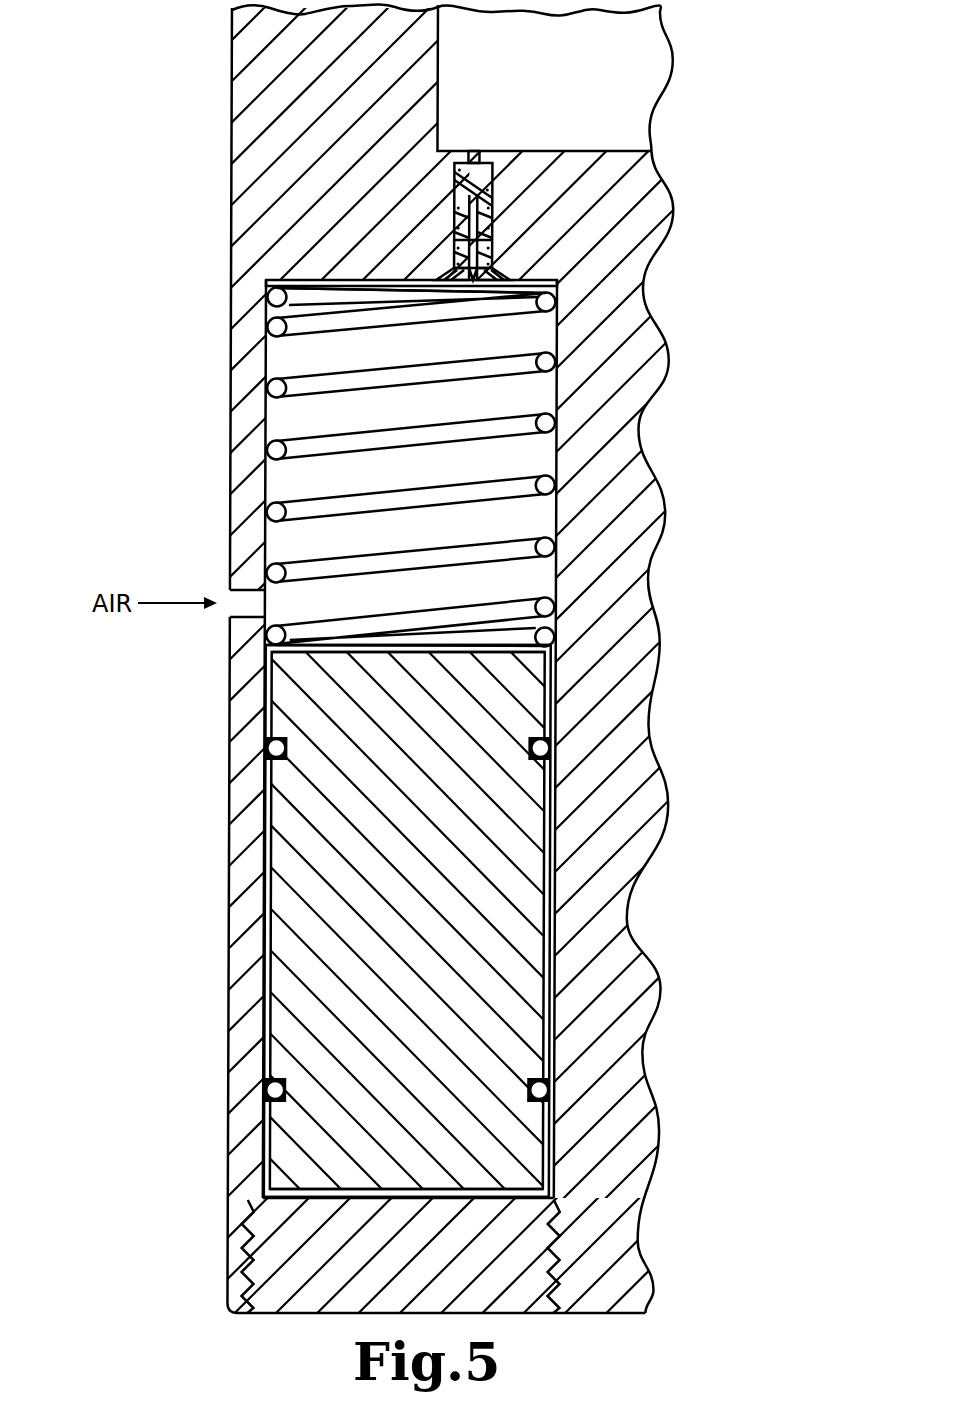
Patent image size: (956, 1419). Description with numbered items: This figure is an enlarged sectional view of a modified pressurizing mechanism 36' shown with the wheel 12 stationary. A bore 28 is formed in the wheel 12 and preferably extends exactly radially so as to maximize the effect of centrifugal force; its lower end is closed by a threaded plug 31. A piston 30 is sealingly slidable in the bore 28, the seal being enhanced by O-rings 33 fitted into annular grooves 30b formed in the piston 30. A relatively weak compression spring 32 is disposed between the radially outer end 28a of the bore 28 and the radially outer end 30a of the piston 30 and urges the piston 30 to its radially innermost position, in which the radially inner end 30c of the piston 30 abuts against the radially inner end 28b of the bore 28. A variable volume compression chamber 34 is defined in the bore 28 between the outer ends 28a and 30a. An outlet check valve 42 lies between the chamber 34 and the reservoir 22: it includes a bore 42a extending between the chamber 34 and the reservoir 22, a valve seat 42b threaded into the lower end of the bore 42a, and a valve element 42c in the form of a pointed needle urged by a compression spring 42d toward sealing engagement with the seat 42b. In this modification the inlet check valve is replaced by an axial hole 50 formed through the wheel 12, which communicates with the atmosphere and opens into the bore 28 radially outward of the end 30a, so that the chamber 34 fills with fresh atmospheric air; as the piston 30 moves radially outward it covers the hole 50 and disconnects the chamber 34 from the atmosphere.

The wheel 12 is at (478, 688).
The reservoir 22 is at (582, 52).
The bore 28 is at (358, 723).
The radially outer end of the bore 28a is at (299, 282).
The radially inner end of the bore 28b is at (319, 1185).
The piston 30 is at (478, 920).
The radially outer end of the piston 30a is at (517, 653).
The annular grooves 30b is at (439, 928).
The radially inner end of the piston 30c is at (539, 1188).
The threaded plug 31 is at (296, 1297).
The compression spring 32 is at (308, 388).
The O-rings 33 is at (300, 750).
The variable volume compression chamber 34 is at (369, 467).
The actuator assembly 36' is at (478, 688).
The outlet check valve 42 is at (585, 205).
The bore of the outlet check valve 42a is at (496, 205).
The valve seat 42b is at (511, 268).
The valve element 42c is at (497, 242).
The compression spring of the outlet check valve 42d is at (503, 188).
The axial passageway or hole 50 is at (220, 617).